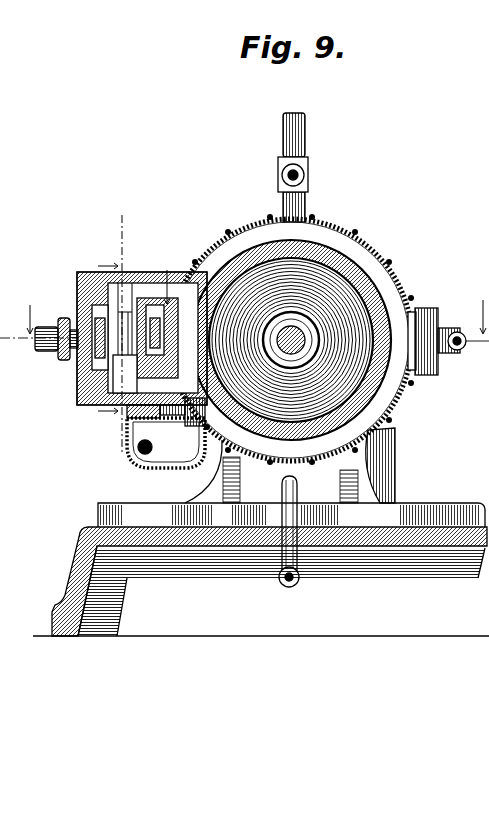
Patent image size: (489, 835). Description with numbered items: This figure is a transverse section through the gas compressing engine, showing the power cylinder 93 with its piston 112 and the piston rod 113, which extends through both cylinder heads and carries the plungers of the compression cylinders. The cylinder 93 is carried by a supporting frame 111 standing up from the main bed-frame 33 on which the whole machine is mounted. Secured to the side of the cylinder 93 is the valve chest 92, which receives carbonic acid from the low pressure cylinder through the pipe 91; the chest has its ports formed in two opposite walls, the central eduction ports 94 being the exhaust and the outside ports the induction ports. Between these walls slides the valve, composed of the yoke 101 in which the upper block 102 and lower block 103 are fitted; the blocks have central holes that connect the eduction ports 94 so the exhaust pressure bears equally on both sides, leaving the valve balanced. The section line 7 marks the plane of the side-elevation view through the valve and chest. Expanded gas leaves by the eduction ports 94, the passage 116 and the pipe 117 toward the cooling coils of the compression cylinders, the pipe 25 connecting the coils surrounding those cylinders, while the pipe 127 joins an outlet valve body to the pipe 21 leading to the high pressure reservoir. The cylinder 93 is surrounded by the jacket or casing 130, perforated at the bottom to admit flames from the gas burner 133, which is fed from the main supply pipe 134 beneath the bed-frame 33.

The section line 7- 7 is at (120, 327).
The pipe 21 is at (291, 128).
The pipe 25 is at (445, 354).
The main bed-frame 33 is at (261, 569).
The pipe 91 is at (39, 343).
The valve chest 92 is at (83, 271).
The power cylinder 93 is at (233, 253).
The eduction ports 94 is at (140, 295).
The yoke 101 is at (97, 320).
The upper valve block 102 is at (78, 284).
The lower valve block 103 is at (83, 383).
The supporting frames 111 is at (426, 311).
The piston 112 is at (291, 340).
The piston rod 113 is at (291, 340).
The passage 116 is at (185, 444).
The pipe 117 is at (128, 426).
The pipe 127 is at (304, 174).
The jacket or casing 130 is at (390, 399).
The gas burner 133 is at (300, 490).
The main supply pipe 134 is at (292, 582).